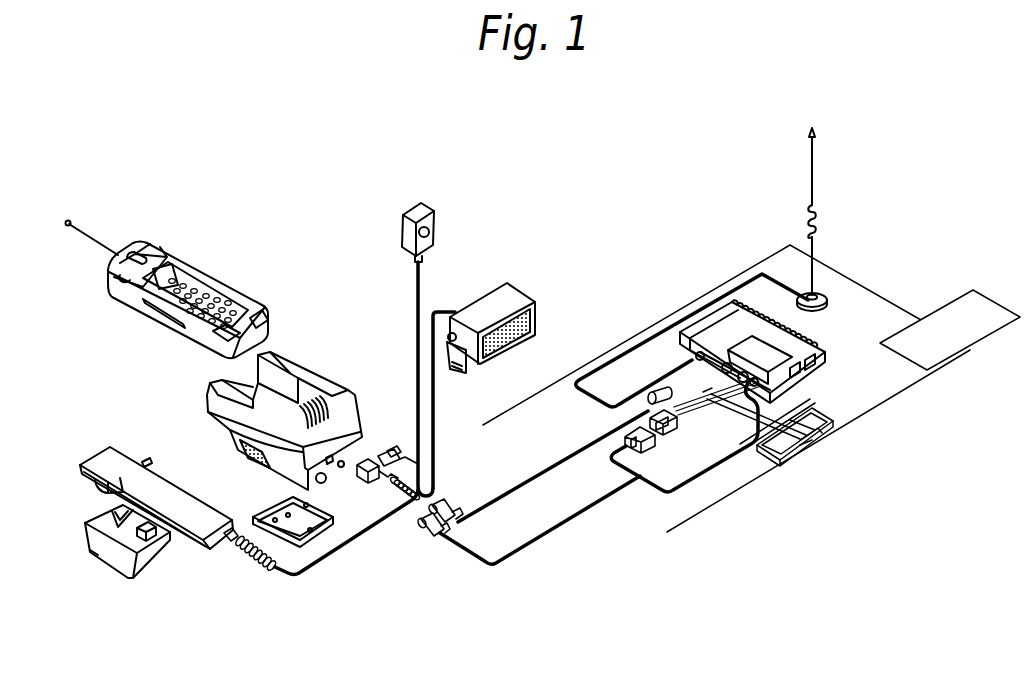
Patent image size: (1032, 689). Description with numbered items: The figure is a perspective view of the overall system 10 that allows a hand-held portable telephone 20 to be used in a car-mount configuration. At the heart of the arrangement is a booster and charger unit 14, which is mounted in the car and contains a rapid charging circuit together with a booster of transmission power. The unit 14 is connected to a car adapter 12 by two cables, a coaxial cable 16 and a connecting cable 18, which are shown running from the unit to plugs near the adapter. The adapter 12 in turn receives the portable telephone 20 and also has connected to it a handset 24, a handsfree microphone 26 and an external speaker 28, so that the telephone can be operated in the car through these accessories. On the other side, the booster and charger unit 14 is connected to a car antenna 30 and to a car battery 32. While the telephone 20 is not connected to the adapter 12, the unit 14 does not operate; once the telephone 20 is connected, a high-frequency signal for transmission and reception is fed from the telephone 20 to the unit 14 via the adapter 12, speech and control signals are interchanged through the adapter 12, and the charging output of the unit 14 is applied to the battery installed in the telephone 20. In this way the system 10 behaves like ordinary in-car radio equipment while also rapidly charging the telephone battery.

The system 10 is at (542, 178).
The car adapter 12 is at (319, 366).
The booster and charger unit 14 is at (818, 331).
The coaxial cable 16 is at (492, 498).
The connecting cable 18 is at (545, 537).
The hand-held portable telephone 20 is at (179, 257).
The handset 24 is at (124, 448).
The handsfree microphone 26 is at (399, 232).
The external speaker 28 is at (521, 291).
The car antenna 30 is at (815, 170).
The car battery 32 is at (973, 290).